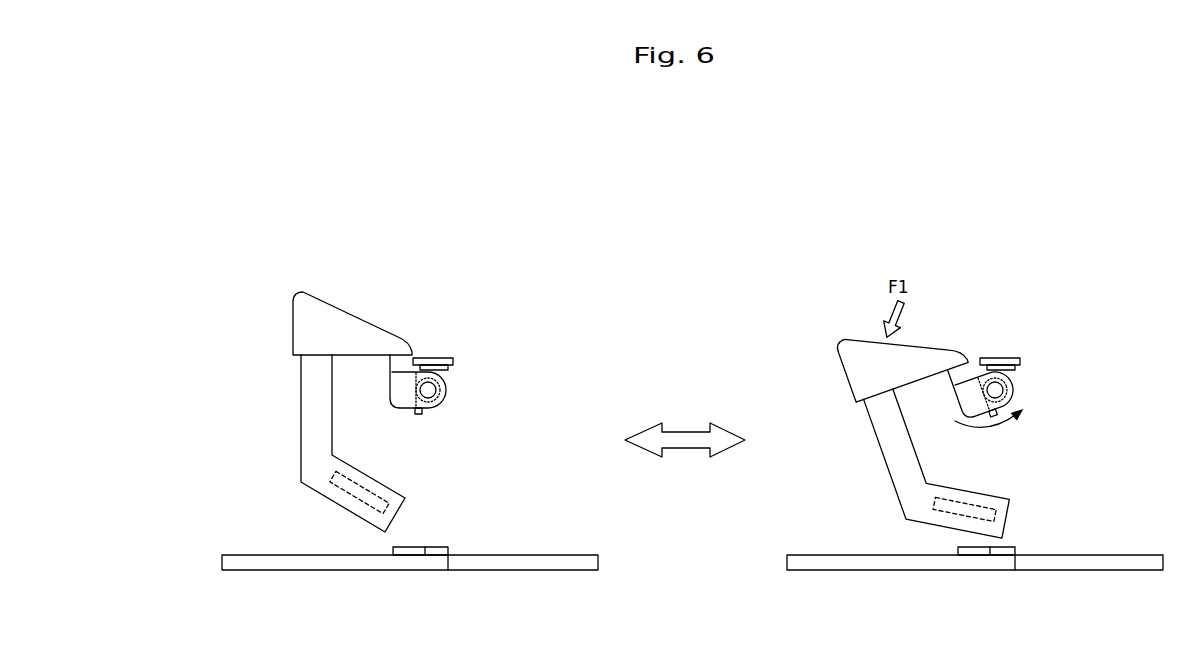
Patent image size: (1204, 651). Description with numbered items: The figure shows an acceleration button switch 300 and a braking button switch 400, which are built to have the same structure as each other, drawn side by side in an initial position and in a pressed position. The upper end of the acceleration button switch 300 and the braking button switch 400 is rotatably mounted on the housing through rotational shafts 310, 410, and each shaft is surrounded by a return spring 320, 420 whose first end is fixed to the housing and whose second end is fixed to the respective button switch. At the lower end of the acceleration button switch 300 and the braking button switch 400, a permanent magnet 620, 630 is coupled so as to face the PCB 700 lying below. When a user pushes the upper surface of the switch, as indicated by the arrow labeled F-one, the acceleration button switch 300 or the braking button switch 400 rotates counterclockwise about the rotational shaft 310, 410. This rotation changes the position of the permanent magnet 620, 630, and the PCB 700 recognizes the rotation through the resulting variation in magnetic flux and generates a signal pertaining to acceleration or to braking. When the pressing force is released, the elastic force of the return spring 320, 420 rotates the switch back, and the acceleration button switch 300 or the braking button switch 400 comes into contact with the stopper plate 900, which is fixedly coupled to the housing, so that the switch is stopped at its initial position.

The acceleration button switch 300 is at (563, 347).
The braking button switch 400 is at (310, 329).
The rotational shaft 310 is at (794, 397).
The rotational shaft 410 is at (437, 389).
The return spring 320 is at (782, 399).
The return spring 420 is at (438, 407).
The permanent magnet 620 is at (668, 505).
The permanent magnet 630 is at (353, 493).
The stopper plate 900 is at (437, 358).
The PCB 700 is at (548, 563).